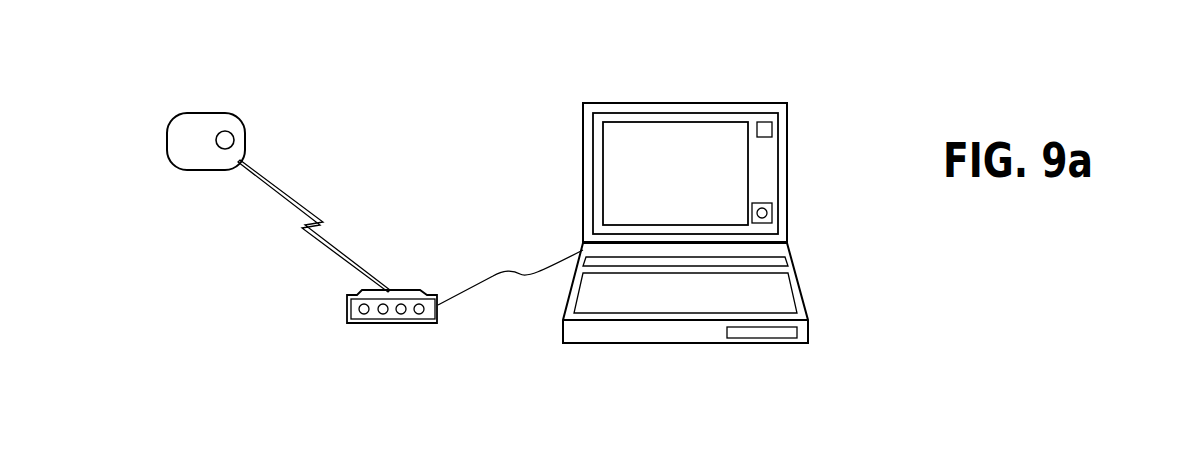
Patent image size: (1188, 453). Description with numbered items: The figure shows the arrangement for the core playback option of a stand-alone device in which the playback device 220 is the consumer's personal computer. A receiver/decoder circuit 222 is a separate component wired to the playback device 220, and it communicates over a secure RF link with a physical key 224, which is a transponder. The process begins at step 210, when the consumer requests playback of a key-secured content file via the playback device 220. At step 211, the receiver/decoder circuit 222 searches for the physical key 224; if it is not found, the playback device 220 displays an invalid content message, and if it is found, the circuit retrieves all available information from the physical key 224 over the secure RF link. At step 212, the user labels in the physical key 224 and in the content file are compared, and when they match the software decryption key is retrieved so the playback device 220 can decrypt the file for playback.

The step of requesting playback 210 is at (723, 222).
The step of searching for physical key 211 is at (330, 223).
The step of comparing user labels 212 is at (685, 125).
The playback device 220 is at (656, 343).
The receiver/decoder circuit 222 is at (393, 323).
The physical key 224 is at (207, 170).